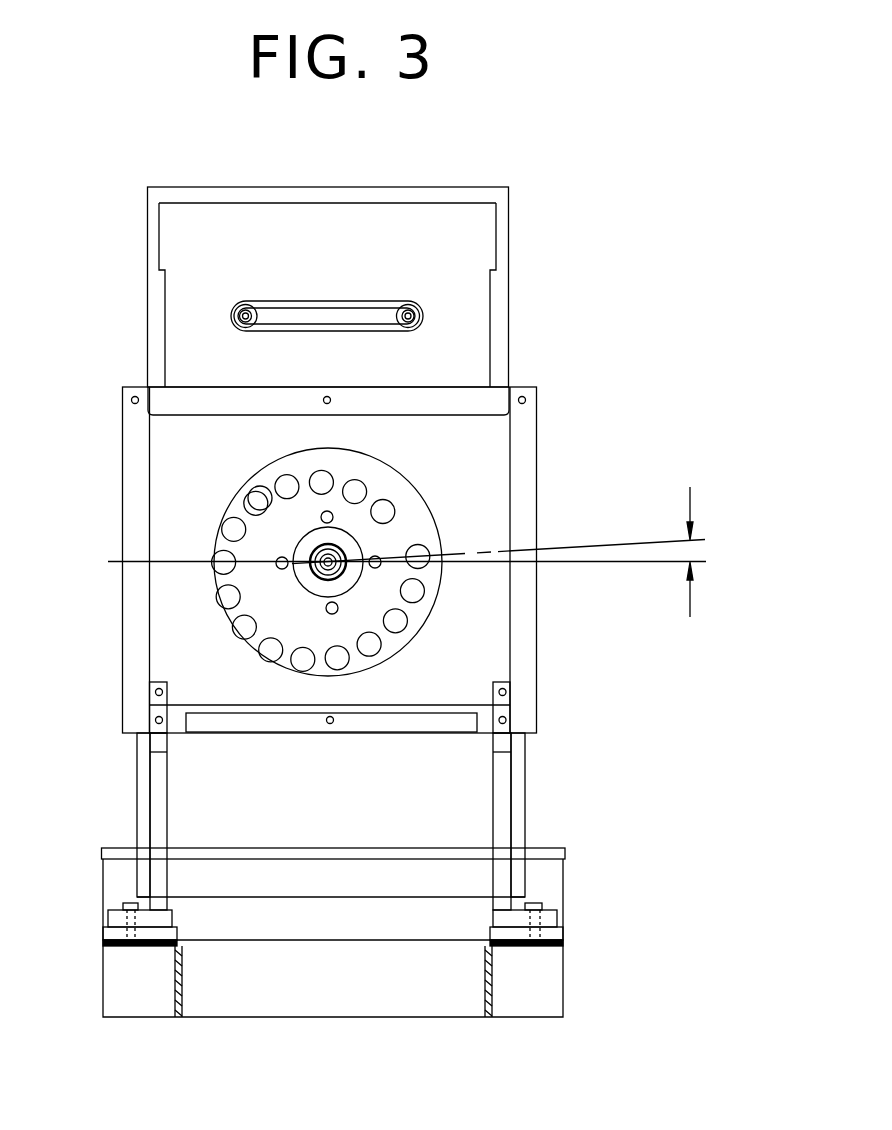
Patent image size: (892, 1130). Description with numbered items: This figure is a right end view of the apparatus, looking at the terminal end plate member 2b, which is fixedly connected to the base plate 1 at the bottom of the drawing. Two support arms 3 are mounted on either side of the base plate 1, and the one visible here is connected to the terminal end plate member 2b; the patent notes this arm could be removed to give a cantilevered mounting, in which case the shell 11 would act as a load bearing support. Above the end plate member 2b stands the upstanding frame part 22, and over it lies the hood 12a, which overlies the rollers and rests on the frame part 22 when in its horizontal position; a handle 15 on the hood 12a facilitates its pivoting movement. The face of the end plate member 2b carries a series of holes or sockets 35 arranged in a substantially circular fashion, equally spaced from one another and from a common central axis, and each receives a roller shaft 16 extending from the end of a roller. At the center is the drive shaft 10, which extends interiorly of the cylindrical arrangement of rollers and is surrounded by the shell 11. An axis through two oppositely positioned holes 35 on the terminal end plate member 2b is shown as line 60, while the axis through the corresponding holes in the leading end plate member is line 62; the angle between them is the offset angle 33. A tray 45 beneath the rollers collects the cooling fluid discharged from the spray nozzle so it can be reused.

The base plate 1 is at (292, 1005).
The terminal end plate member 2b is at (172, 657).
The support arm 3 is at (508, 804).
The drive shaft 10 is at (342, 570).
The shell 11 is at (295, 556).
The hood 12a is at (483, 192).
The handle 15 is at (327, 317).
The roller shaft 16 is at (393, 495).
The upstanding frame part 22 is at (462, 385).
The offset angle 33 is at (698, 552).
The holes or sockets 35 is at (260, 498).
The tray 45 is at (388, 930).
The axis through oppositely positioned holes on terminal end plate member 60 is at (600, 548).
The axis through corresponding holes in leading end plate member 62 is at (640, 564).